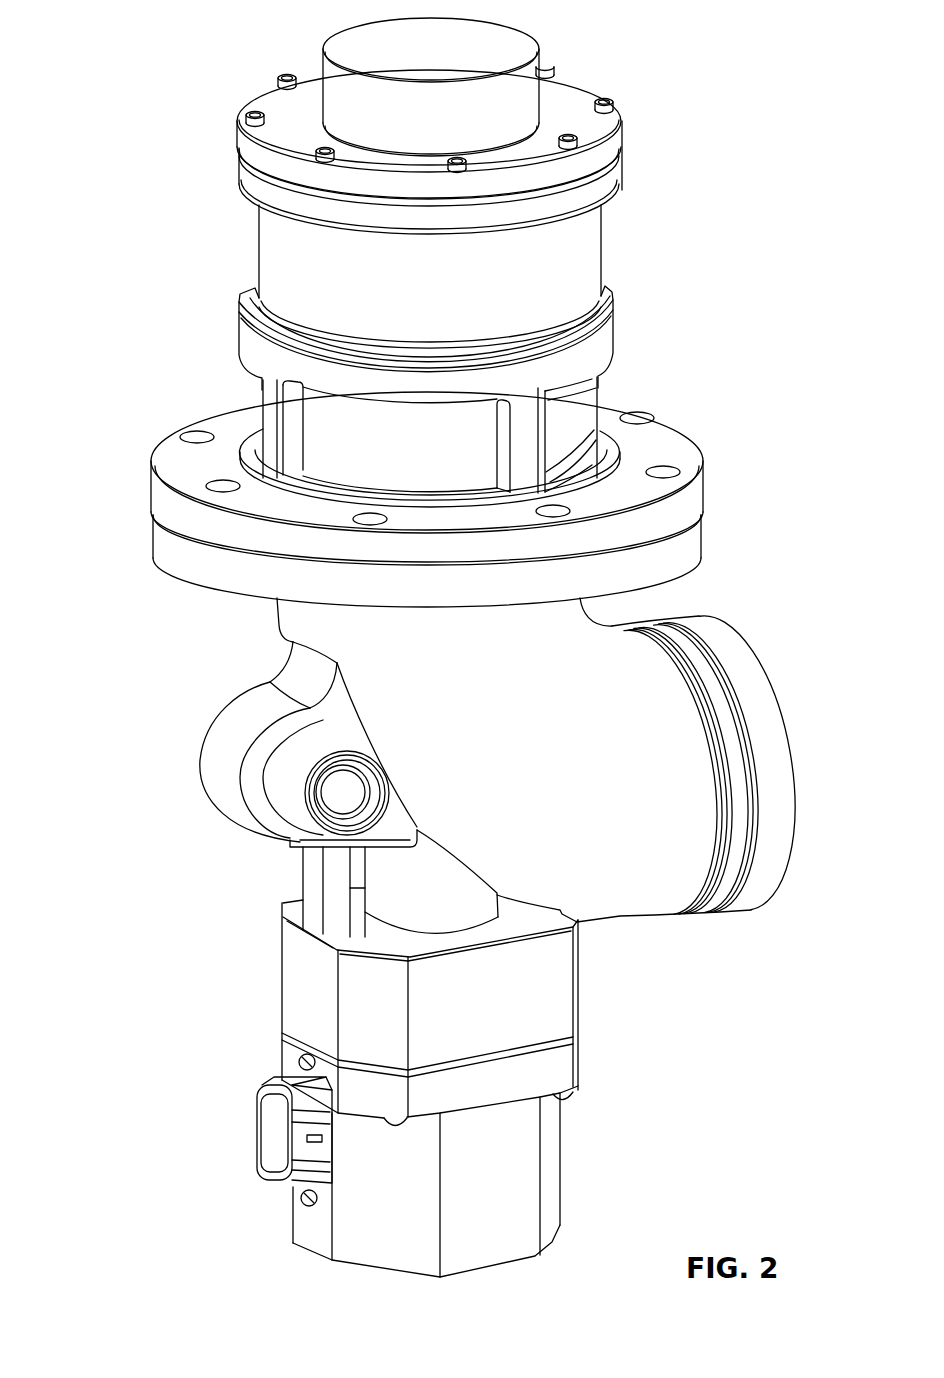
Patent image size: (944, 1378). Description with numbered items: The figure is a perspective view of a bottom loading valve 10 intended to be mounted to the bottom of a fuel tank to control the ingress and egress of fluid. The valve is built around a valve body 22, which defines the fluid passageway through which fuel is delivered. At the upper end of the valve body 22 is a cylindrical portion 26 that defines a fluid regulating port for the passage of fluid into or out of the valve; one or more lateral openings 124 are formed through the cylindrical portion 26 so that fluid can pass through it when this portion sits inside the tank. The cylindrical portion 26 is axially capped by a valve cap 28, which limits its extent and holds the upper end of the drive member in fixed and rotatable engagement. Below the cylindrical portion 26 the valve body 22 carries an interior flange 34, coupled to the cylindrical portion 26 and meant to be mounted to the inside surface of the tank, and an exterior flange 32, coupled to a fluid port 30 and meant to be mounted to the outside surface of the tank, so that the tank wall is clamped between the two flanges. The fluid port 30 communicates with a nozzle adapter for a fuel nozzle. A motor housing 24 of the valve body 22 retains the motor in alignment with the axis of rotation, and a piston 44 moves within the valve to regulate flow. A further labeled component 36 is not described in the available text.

The bottom loading valve 10 is at (116, 56).
The valve body 22 is at (450, 501).
The motor housing 24 is at (523, 1180).
The cylindrical portion 26 is at (275, 263).
The valve cap 28 is at (258, 152).
The fluid port 30 is at (778, 757).
The exterior flange 32 is at (683, 520).
The interior flange 34 is at (680, 483).
The cover flange 36 is at (605, 176).
The piston 44 is at (683, 443).
The lateral openings 124 is at (205, 371).